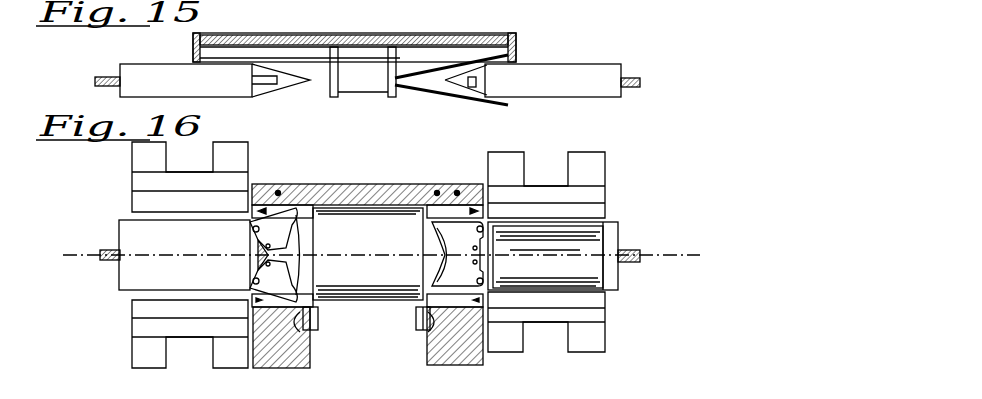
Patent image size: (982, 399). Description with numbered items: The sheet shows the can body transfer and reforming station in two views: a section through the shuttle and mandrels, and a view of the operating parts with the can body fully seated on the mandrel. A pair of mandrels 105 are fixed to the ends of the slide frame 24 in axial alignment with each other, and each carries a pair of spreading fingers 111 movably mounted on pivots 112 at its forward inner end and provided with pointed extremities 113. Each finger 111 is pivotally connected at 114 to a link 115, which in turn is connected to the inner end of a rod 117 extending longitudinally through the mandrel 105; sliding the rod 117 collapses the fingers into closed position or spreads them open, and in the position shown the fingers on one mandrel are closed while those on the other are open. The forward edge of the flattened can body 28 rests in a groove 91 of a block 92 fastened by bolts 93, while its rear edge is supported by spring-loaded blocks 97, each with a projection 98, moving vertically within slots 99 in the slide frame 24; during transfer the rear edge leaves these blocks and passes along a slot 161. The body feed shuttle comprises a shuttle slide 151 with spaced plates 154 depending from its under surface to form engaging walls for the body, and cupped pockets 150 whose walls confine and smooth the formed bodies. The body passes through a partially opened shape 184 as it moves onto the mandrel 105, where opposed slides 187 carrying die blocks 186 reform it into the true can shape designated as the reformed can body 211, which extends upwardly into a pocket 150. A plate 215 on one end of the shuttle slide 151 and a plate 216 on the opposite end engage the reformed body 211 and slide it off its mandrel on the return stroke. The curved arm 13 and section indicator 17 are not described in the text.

In FIG. 16, the clamp jaw arm 13 is at (371, 255).
In FIG. 16, the section line 17- 17 is at (73, 300).
In FIG. 15, the slide frame 24 is at (462, 5).
In FIG. 16, the slide frame 24 is at (293, 366).
In FIG. 16, the flattened can body 28 is at (368, 254).
In FIG. 16, the groove 91 is at (278, 190).
In FIG. 16, the block 92 is at (312, 190).
In FIG. 16, the bolts 93 is at (458, 190).
In FIG. 16, the blocks 97 is at (318, 321).
In FIG. 16, the projection 98 is at (425, 324).
In FIG. 16, the slots 99 is at (302, 332).
In FIG. 15, the mandrel 105 is at (370, 80).
In FIG. 16, the mandrel 105 is at (640, 223).
In FIG. 15, the spreading fingers 111 is at (262, 93).
In FIG. 16, the spreading fingers 111 is at (366, 255).
In FIG. 16, the pivots 112 is at (252, 229).
In FIG. 15, the pointed extremities 113 is at (304, 84).
In FIG. 16, the pivotal connection 114 is at (264, 246).
In FIG. 16, the link 115 is at (258, 255).
In FIG. 15, the rod 117 is at (108, 76).
In FIG. 16, the rod 117 is at (110, 262).
In FIG. 15, the pockets 150 is at (258, 46).
In FIG. 15, the shuttle slide 151 is at (362, 45).
In FIG. 15, the plates 154 is at (388, 77).
In FIG. 16, the slot 161 is at (250, 303).
In FIG. 15, the partially opened shape 184 is at (402, 92).
In FIG. 16, the die blocks 186 is at (368, 264).
In FIG. 16, the slides 187 is at (368, 255).
In FIG. 16, the reformed can body 211 is at (588, 242).
In FIG. 15, the plate 215 is at (517, 53).
In FIG. 15, the plate 216 is at (193, 51).